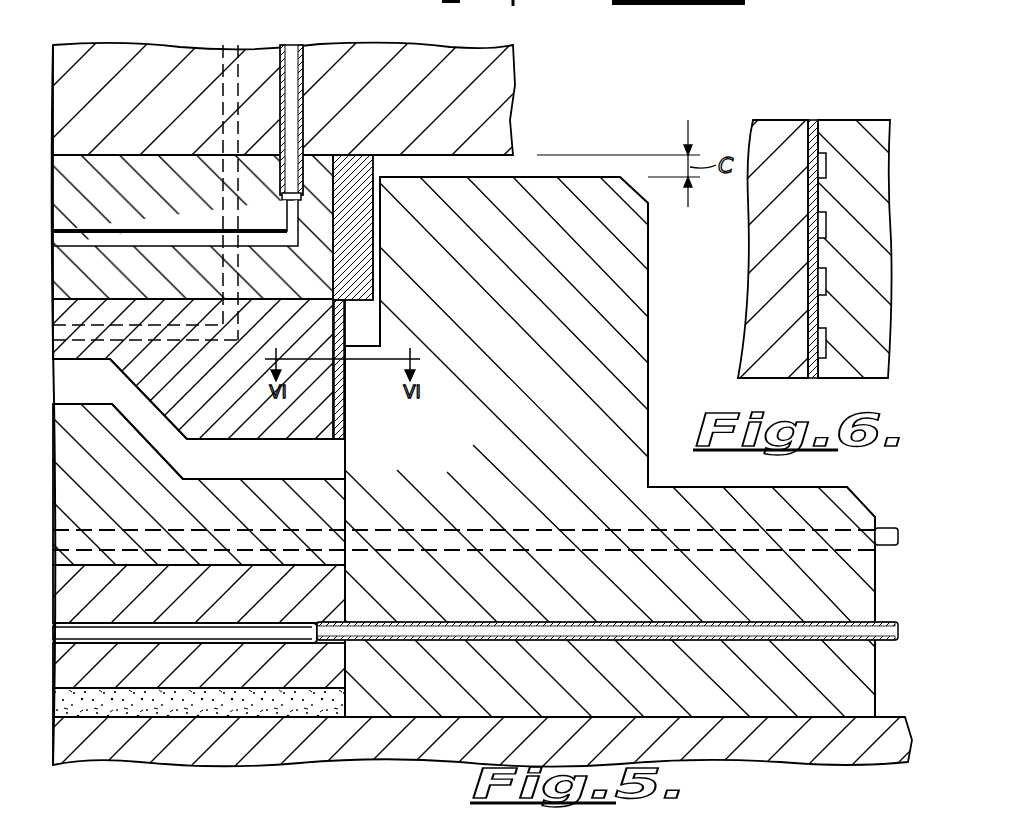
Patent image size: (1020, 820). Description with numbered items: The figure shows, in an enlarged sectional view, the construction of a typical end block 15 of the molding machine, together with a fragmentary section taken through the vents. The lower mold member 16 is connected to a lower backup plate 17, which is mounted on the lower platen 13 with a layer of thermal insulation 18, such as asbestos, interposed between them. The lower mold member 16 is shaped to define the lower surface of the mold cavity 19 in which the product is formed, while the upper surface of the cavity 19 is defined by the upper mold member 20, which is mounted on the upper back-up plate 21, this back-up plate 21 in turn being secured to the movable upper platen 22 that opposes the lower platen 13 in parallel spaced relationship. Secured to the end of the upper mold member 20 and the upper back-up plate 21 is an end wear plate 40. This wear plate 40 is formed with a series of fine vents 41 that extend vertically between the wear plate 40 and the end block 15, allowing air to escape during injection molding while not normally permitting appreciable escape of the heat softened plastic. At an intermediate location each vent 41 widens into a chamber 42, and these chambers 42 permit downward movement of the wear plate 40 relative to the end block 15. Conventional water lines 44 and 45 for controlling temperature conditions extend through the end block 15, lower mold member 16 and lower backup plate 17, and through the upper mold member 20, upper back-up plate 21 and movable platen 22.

In FIG. 5, the lower platen 13 is at (292, 757).
In FIG. 5, the end block 15 is at (640, 466).
In FIG. 6, the end block 15 is at (872, 360).
In FIG. 5, the lower mold member 16 is at (108, 556).
In FIG. 5, the lower backup plate 17 is at (165, 670).
In FIG. 5, the layer of thermal insulation 18 is at (241, 702).
In FIG. 5, the mold cavity 19 is at (272, 457).
In FIG. 6, the upper mold member 20 is at (752, 283).
In FIG. 5, the upper back-up plate 21 is at (110, 167).
In FIG. 5, the movable upper platen 22 is at (496, 89).
In FIG. 5, the end wear plate 40 is at (378, 150).
In FIG. 6, the end wear plate 40 is at (812, 318).
In FIG. 5, the vents 41 is at (380, 226).
In FIG. 6, the vents 41 is at (815, 278).
In FIG. 5, the chamber 42 is at (372, 322).
In FIG. 5, the water line 44 is at (241, 560).
In FIG. 5, the water line 45 is at (258, 50).